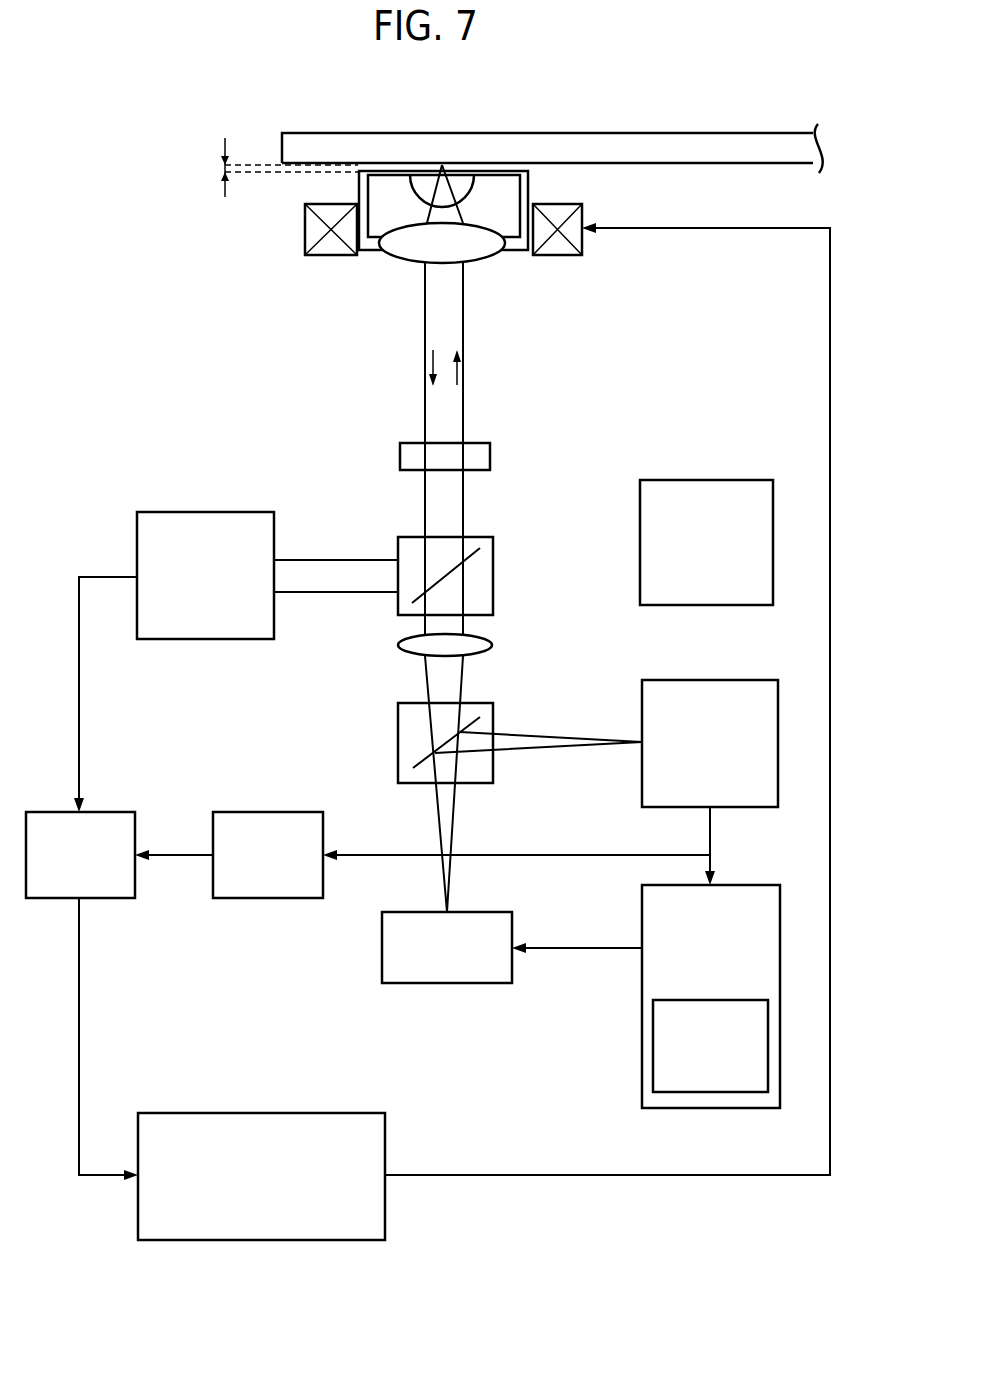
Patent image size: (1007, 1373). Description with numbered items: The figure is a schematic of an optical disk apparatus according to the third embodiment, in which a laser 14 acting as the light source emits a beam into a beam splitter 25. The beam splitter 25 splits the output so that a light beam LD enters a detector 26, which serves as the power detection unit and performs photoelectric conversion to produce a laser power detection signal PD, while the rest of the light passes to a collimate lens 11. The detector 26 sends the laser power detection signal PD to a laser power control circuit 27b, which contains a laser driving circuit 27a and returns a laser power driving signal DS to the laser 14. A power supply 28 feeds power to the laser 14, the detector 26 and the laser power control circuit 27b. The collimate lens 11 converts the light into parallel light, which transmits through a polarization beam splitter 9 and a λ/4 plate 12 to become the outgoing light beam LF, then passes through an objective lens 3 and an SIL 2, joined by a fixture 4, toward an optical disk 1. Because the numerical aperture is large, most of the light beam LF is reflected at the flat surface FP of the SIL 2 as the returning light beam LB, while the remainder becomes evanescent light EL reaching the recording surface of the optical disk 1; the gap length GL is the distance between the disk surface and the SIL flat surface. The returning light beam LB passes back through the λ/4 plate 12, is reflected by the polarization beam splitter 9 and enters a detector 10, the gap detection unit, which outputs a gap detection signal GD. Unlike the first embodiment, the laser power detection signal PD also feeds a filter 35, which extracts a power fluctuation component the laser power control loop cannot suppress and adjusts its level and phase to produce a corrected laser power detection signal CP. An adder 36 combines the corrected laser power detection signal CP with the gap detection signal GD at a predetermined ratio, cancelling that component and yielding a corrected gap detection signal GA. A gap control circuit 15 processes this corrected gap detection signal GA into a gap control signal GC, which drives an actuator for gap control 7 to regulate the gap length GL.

The optical disk 1 is at (605, 133).
The SIL 2 is at (425, 182).
The objective lens 3 is at (490, 262).
The fixture 4 is at (360, 176).
The actuator for gap control 7 is at (330, 257).
The polarization beam splitter 9 is at (493, 563).
The detector 10 is at (237, 512).
The collimate lens 11 is at (490, 641).
The λ/4 plate 12 is at (490, 457).
The laser 14 is at (485, 912).
The gap control circuit 15 is at (240, 1113).
The beam splitter 25 is at (398, 740).
The detector 26 is at (745, 680).
The laser driving circuit 27a is at (713, 1092).
The laser power control circuit 27b is at (745, 885).
The power supply 28 is at (738, 480).
The filter 35 is at (285, 812).
The adder 36 is at (100, 812).
The gap length GL is at (222, 168).
The evanescent light EL is at (447, 178).
The flat surface FP is at (460, 178).
The light beam (returning) LB is at (425, 360).
The light beam (outgoing) LF is at (463, 373).
The gap detection signal GD is at (80, 692).
The gap control signal GC is at (830, 336).
The corrected laser power detection signal CP is at (190, 853).
The light beam LD is at (531, 736).
The laser power detection signal PD is at (710, 834).
The laser power driving signal DS is at (566, 950).
The corrected gap detection signal GA is at (80, 982).